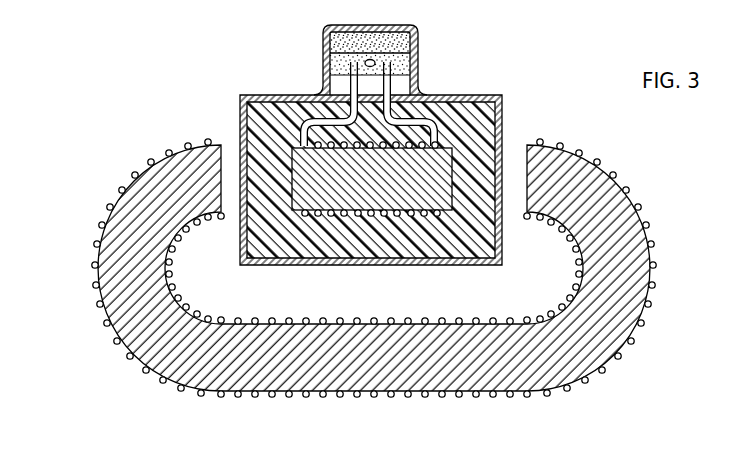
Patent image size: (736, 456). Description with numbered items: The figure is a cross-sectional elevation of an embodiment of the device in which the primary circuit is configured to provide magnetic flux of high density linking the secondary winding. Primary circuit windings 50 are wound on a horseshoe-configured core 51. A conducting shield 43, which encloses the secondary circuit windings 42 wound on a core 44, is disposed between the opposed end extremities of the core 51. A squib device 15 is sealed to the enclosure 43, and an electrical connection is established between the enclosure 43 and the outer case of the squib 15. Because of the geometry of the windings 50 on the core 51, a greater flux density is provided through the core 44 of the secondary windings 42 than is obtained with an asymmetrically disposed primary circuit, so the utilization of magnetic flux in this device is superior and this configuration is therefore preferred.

The squib device 15 is at (418, 55).
The secondary circuit windings 42 is at (349, 214).
The conducting shield 43 is at (500, 112).
The core 44 is at (374, 200).
The primary circuit windings 50 is at (656, 245).
The horseshoe-configured core 51 is at (641, 288).